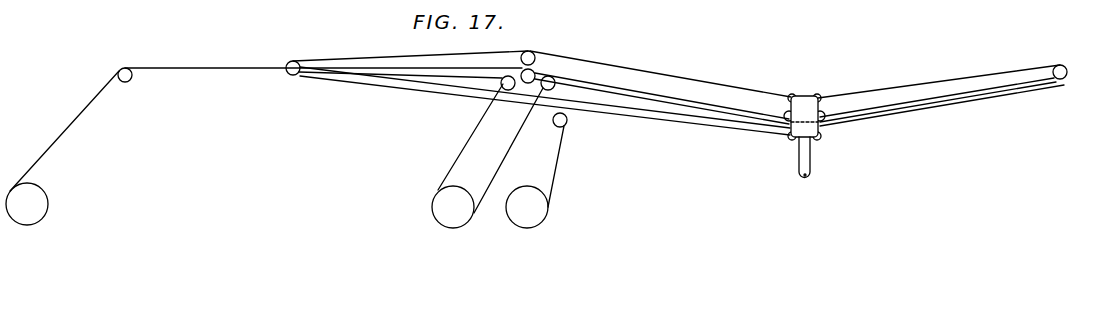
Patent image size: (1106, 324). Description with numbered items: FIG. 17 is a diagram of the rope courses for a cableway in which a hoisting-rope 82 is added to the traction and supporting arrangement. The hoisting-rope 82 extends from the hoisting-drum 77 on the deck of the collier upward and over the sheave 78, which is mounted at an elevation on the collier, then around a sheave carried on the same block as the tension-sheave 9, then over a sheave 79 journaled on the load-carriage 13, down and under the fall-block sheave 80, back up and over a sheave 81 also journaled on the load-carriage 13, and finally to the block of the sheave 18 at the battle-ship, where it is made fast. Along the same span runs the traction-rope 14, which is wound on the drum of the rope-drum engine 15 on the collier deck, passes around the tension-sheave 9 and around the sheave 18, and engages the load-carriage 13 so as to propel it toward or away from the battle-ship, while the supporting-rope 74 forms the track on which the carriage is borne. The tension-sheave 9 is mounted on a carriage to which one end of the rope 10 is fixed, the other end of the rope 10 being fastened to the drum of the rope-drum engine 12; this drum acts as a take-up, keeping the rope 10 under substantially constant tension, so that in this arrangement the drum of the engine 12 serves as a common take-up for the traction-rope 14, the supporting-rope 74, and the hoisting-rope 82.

The tension-sheave 9 is at (290, 76).
The rope 10 is at (213, 69).
The rope-drum engine 12 is at (27, 204).
The load-carriage 13 is at (808, 119).
The traction-rope 14 is at (915, 78).
The rope-drum engine 15 is at (453, 207).
The sheave 18 is at (1060, 66).
The supporting-rope 74 is at (958, 93).
The hoisting-drum 77 is at (527, 207).
The sheave 78 is at (567, 121).
The sheave 79 is at (792, 140).
The fall-block sheave 80 is at (804, 179).
The sheave 81 is at (820, 133).
The hoisting-rope 82 is at (687, 116).